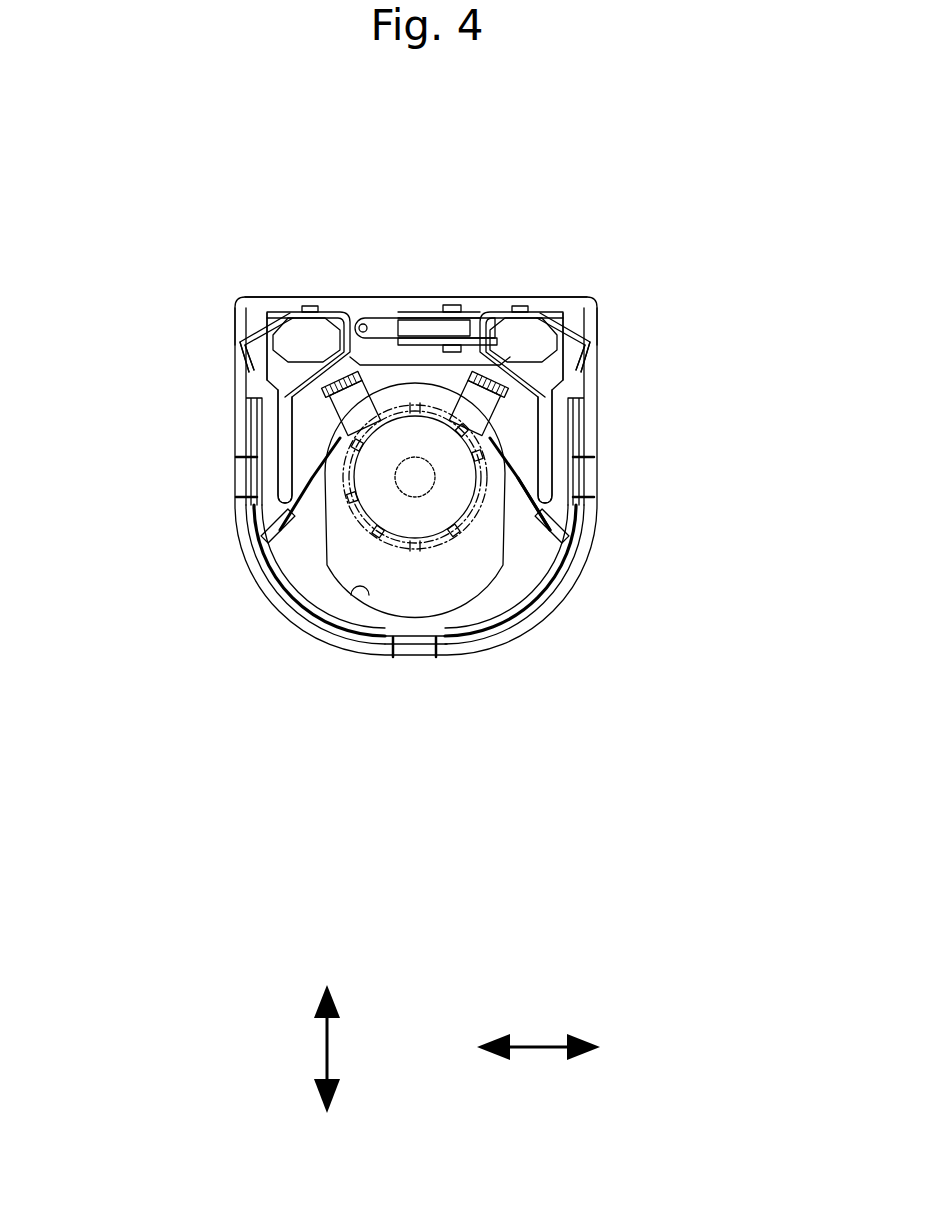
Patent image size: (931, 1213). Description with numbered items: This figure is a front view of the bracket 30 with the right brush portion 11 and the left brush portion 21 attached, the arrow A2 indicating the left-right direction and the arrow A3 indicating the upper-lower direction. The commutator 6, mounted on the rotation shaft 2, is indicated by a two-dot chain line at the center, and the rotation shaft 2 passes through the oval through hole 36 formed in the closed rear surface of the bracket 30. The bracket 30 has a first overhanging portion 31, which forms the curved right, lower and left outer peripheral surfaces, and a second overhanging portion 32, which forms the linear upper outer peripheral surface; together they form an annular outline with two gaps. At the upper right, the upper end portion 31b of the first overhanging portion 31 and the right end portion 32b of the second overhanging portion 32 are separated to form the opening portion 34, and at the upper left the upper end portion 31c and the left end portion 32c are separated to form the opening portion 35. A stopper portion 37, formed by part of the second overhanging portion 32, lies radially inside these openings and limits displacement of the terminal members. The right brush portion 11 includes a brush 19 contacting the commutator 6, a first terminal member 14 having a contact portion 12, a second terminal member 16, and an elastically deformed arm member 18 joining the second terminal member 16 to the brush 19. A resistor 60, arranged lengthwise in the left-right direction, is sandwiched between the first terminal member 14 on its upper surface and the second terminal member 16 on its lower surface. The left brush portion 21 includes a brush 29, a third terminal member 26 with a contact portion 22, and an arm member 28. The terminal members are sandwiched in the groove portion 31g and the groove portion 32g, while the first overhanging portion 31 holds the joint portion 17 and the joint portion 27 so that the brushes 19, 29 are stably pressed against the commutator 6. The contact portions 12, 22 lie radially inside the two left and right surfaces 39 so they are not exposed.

The rotation shaft 2 is at (407, 512).
The commutator 6 is at (447, 572).
The right brush portion 11 is at (597, 415).
The contact portion 12 is at (597, 330).
The first terminal member 14 is at (473, 307).
The second terminal member 16 is at (597, 447).
The joint portion 17 is at (563, 530).
The arm member 18 is at (597, 475).
The brush 19 is at (523, 530).
The left brush portion 21 is at (268, 438).
The contact portion 22 is at (235, 327).
The third terminal member 26 is at (240, 480).
The joint portion 27 is at (268, 520).
The arm member 28 is at (325, 530).
The brush 29 is at (343, 520).
The bracket 30 is at (329, 283).
The first overhanging portion 31 is at (502, 602).
The upper end portion 31b is at (561, 405).
The upper end portion 31c is at (240, 388).
The groove portion 31g is at (257, 573).
The second overhanging portion 32 is at (378, 300).
The right end portion 32b is at (552, 312).
The left end portion 32c is at (287, 307).
The groove portion 32g is at (315, 300).
The opening portion 34 is at (597, 357).
The opening portion 35 is at (235, 358).
The through hole 36 is at (362, 596).
The stopper portion 37 is at (248, 296).
The left and right surfaces 39 is at (245, 312).
The resistor 60 is at (396, 318).
The arrow A2 is at (557, 1040).
The arrow A3 is at (323, 1037).